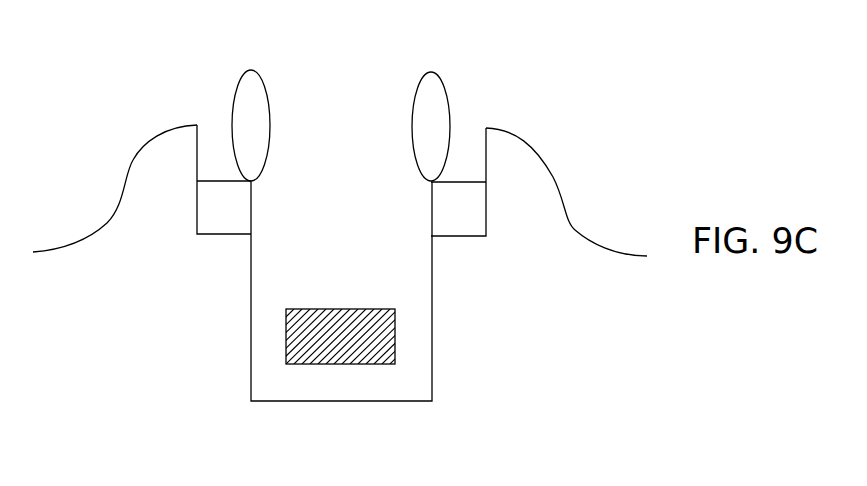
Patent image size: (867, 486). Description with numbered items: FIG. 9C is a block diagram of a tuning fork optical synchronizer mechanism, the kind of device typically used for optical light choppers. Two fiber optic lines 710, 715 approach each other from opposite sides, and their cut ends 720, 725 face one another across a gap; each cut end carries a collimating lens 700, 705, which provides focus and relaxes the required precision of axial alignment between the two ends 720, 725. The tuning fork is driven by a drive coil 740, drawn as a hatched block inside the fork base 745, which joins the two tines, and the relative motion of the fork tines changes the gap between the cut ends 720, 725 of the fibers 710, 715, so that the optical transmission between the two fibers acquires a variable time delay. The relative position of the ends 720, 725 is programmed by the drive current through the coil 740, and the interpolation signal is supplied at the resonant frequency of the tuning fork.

The collimating lens 700 is at (250, 70).
The collimating lens 705 is at (432, 71).
The fiber optic line 710 is at (107, 223).
The fiber optic line 715 is at (575, 230).
The cut end 720 is at (197, 125).
The cut end 725 is at (486, 128).
The drive coil 740 is at (341, 308).
The channel 745 is at (342, 402).